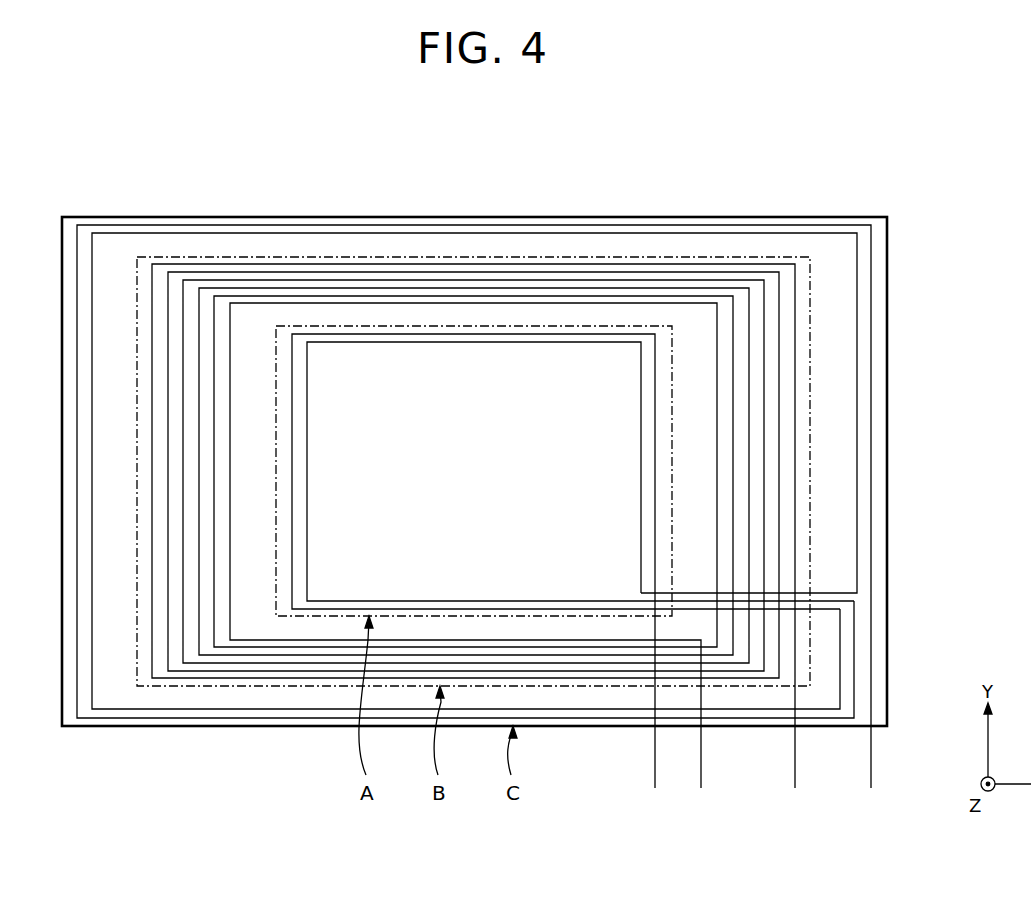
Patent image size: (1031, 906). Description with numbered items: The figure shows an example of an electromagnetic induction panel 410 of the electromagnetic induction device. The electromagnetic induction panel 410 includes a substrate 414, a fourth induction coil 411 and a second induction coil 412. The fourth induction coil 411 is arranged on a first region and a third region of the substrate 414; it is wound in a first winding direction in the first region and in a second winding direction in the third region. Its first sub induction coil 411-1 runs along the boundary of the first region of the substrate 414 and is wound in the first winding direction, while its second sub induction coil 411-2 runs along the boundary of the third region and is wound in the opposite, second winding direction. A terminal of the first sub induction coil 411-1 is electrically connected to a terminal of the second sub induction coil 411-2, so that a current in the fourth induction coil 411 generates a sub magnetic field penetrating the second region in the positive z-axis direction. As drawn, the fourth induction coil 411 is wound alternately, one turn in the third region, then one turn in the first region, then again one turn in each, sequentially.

The electromagnetic induction panel 410 is at (546, 451).
The fourth induction coil 411 is at (554, 506).
The first sub induction coil 411-1 is at (662, 487).
The second sub induction coil 411-2 is at (876, 450).
The second induction coil 412 is at (798, 407).
The substrate 414 is at (887, 549).